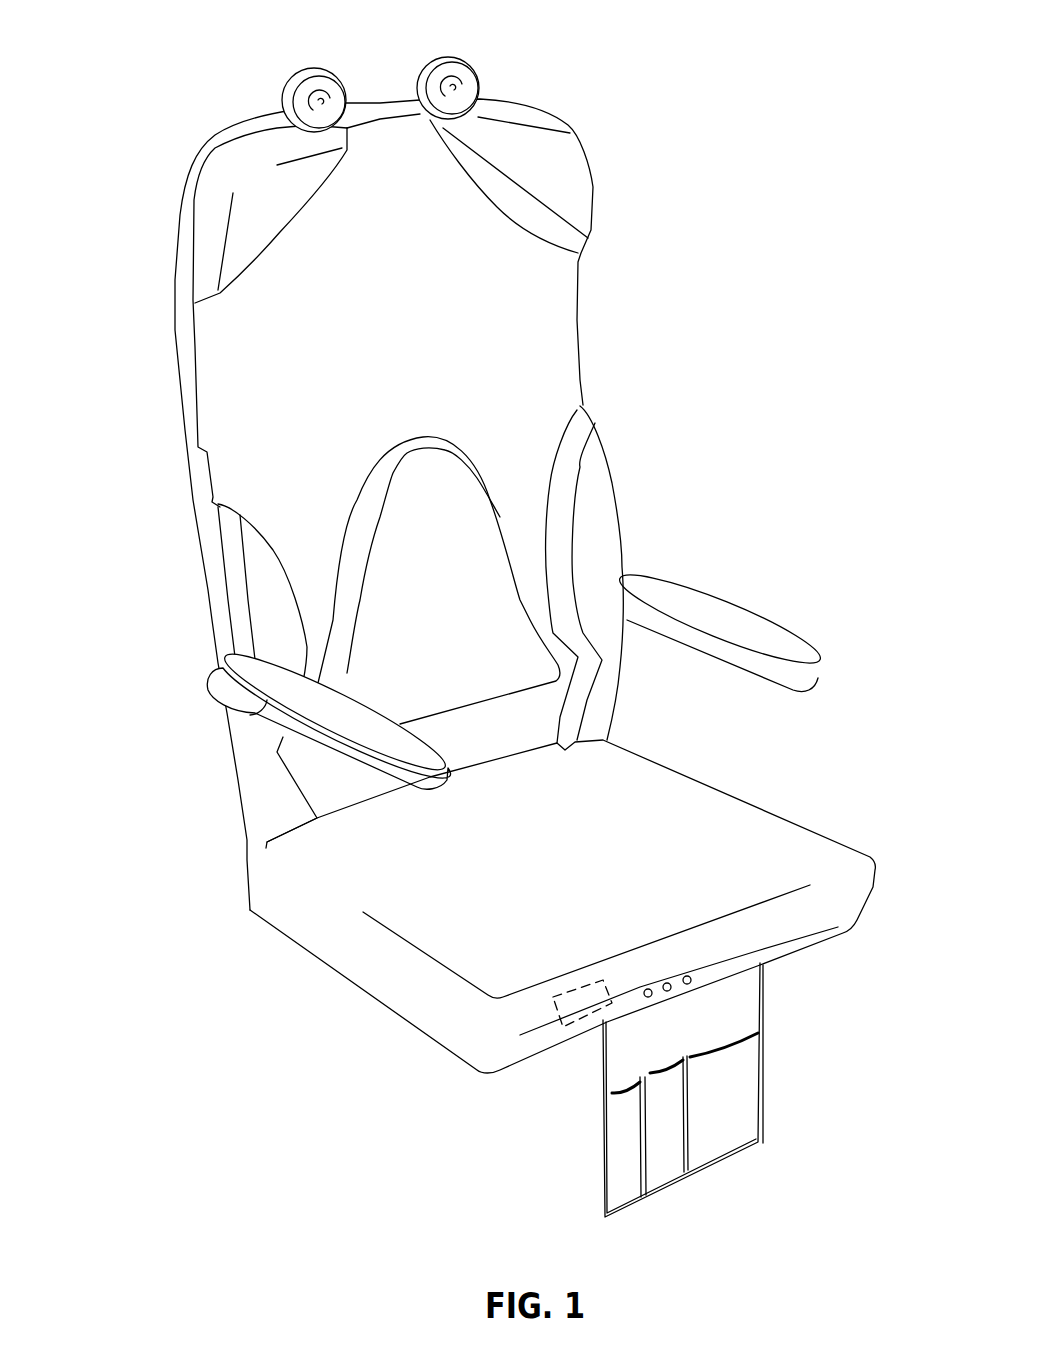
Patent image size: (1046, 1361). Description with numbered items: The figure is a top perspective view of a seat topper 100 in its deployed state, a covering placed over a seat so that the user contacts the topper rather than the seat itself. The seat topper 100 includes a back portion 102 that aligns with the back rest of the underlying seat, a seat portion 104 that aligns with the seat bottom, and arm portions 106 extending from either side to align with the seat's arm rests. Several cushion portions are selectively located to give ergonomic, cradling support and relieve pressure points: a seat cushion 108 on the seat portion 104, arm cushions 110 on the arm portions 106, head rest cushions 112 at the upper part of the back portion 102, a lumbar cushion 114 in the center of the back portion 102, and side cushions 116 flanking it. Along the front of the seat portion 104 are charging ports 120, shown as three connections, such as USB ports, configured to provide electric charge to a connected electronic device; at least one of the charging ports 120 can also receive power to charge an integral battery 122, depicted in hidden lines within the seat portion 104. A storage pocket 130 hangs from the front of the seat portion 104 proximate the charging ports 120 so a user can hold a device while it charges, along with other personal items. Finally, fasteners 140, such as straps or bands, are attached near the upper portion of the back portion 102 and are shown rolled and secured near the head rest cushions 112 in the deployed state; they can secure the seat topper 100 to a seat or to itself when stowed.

The seat topper 100 is at (199, 83).
The back portion 102 is at (578, 325).
The seat portion 104 is at (576, 906).
The arm portion 106 is at (518, 667).
The seat cushion 108 is at (840, 837).
The arm cushion 110 is at (750, 607).
The head rest cushion 112 is at (223, 230).
The lumbar cushion 114 is at (400, 468).
The side cushion 116 is at (610, 490).
The charging port 120 is at (688, 985).
The battery 122 is at (557, 1017).
The storage pocket 130 is at (767, 1057).
The fastener 140 is at (320, 70).